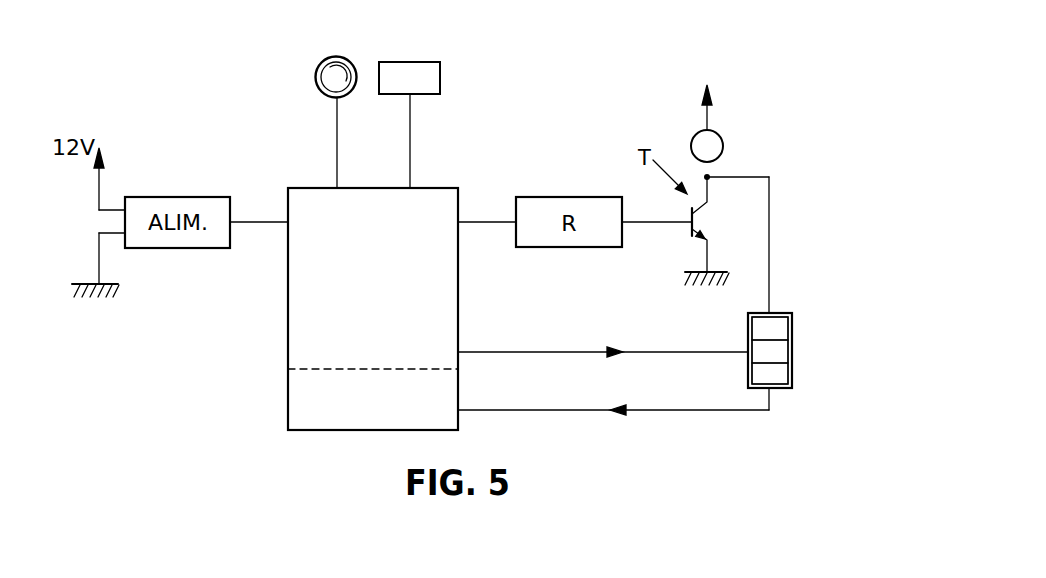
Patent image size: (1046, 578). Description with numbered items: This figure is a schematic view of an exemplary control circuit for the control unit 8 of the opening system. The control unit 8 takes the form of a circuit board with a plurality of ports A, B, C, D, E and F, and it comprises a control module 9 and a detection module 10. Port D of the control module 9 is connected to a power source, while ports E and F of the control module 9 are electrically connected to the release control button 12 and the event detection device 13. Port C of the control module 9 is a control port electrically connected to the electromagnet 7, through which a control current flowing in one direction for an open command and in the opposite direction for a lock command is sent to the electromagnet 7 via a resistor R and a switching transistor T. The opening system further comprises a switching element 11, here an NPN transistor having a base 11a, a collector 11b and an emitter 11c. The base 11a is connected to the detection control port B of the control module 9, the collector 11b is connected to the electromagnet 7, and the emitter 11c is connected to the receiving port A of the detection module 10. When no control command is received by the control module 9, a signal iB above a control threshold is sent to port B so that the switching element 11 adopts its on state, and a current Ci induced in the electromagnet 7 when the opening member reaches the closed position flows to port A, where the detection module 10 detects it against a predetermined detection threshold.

The electromagnet 7 is at (721, 138).
The control unit 8 is at (281, 165).
The control module 9 is at (305, 325).
The detection module 10 is at (305, 413).
The switching element 11 is at (662, 310).
The base 11a is at (790, 328).
The collector 11b is at (790, 350).
The emitter 11c is at (790, 375).
The release control button 12 is at (327, 59).
The event detection device 13 is at (426, 62).